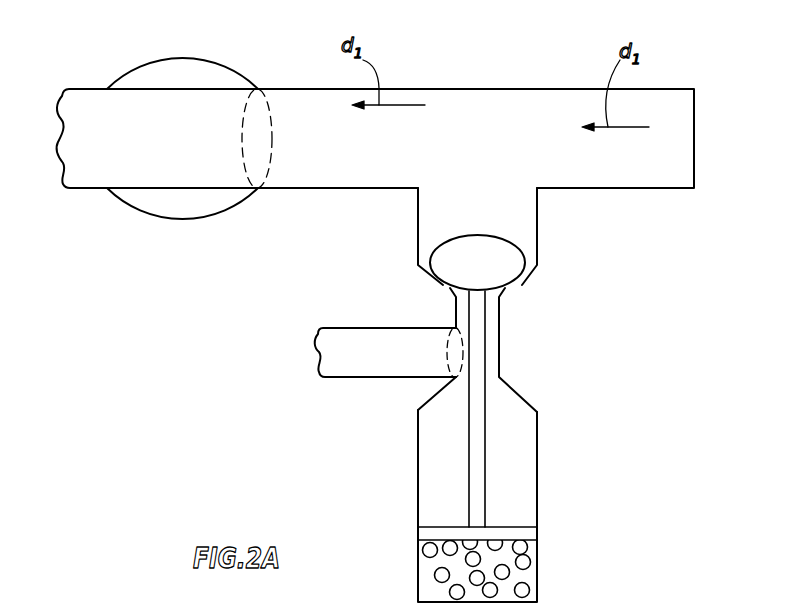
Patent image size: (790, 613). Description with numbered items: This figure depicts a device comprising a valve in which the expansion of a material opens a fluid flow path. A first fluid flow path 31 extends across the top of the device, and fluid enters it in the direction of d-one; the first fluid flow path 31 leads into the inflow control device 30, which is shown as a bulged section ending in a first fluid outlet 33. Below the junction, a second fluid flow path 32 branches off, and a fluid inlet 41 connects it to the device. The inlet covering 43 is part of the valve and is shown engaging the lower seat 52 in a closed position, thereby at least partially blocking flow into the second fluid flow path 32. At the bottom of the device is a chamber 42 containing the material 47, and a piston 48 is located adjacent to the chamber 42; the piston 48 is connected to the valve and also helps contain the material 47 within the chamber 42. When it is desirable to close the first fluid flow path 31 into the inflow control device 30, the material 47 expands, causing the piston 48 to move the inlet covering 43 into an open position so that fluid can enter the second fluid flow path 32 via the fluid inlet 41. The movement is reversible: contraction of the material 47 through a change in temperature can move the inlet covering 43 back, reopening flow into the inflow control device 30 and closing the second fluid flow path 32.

The inflow control device 30 is at (233, 70).
The first fluid flow path 31 is at (672, 87).
The second fluid flow path 32 is at (337, 327).
The first fluid outlet 33 is at (83, 88).
The fluid inlet 41 is at (455, 356).
The chamber 42 is at (537, 562).
The inlet covering 43 is at (487, 276).
The material 47 is at (518, 575).
The piston 48 is at (528, 535).
The lower seat 52 is at (517, 283).